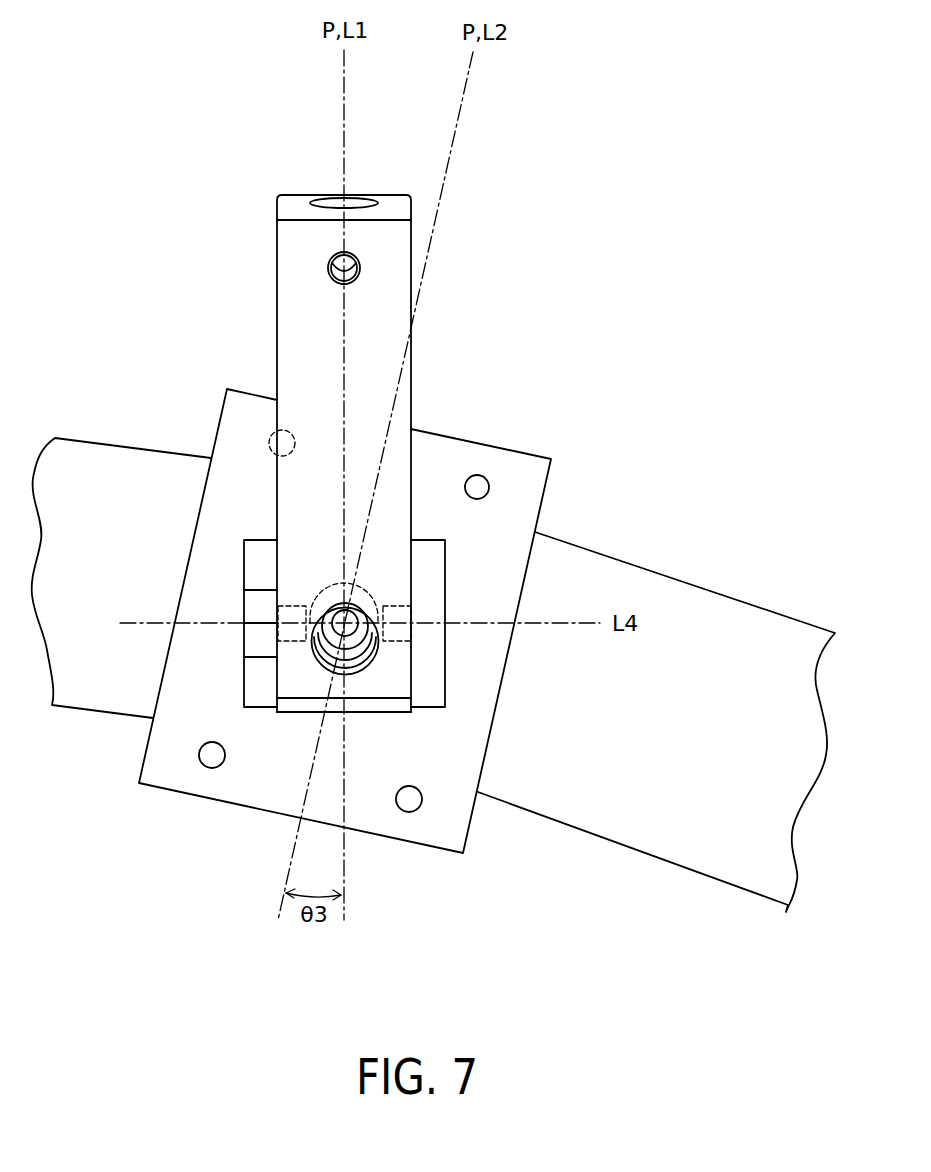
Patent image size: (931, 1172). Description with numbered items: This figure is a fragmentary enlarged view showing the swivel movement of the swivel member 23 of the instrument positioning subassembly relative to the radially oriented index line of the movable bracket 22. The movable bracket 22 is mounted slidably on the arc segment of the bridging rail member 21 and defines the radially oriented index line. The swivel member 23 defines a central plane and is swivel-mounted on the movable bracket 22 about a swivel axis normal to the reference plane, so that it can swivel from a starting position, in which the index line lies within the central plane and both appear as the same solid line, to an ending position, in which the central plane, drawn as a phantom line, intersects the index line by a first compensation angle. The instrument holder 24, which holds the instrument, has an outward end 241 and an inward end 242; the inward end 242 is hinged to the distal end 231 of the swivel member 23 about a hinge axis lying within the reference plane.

The bridging rail member 21 is at (720, 628).
The movable bracket 22 is at (512, 472).
The swivel member 23 is at (470, 586).
The distal end 231 is at (430, 583).
The instrument holder 24 is at (381, 549).
The outward end 241 is at (297, 246).
The inward end 242 is at (393, 668).